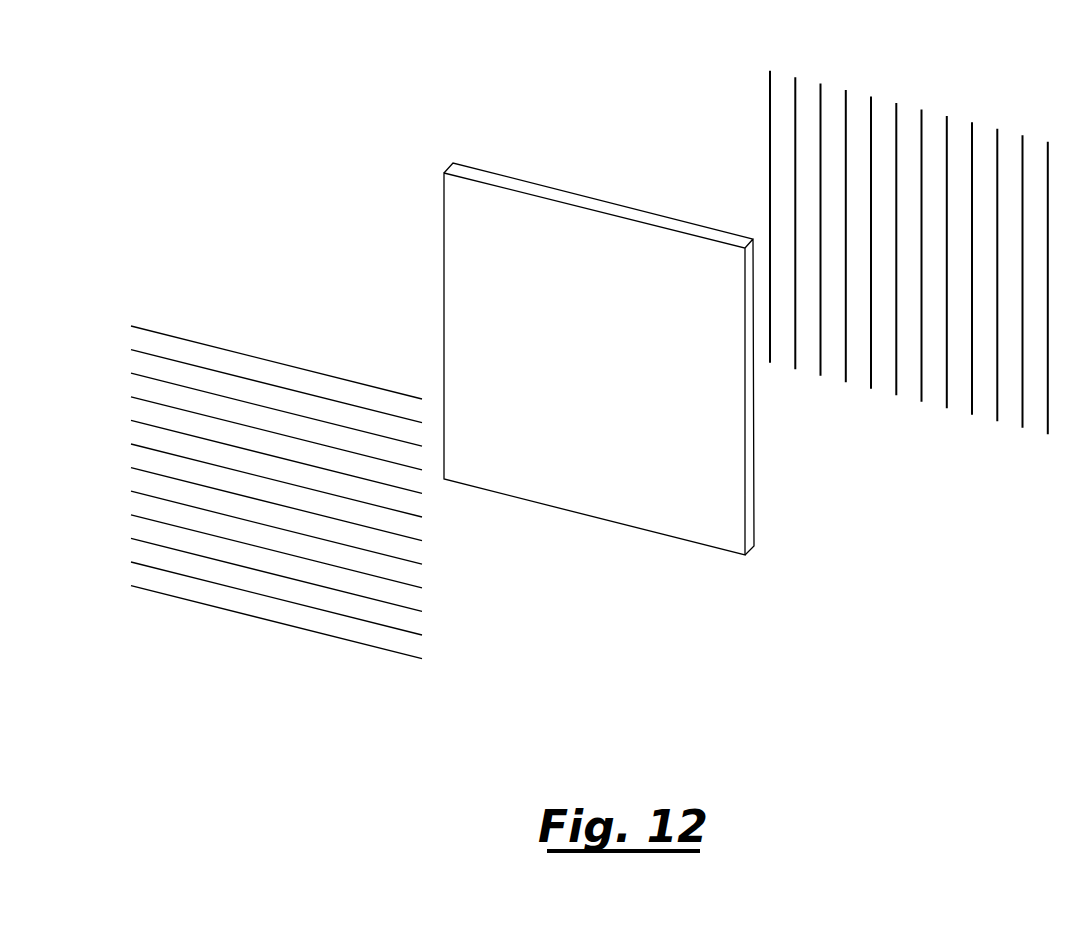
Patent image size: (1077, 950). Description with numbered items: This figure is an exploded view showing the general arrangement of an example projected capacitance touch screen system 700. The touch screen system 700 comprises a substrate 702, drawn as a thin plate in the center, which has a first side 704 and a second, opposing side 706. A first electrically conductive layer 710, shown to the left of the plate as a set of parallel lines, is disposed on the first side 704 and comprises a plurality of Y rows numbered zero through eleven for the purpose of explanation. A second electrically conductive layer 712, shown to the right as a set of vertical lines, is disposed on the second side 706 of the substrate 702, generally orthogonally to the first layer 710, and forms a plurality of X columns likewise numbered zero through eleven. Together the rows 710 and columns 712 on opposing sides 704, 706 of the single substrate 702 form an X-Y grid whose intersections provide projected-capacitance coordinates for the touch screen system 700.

The touch screen system 700 is at (291, 113).
The substrate 702 is at (679, 548).
The first side 704 is at (564, 366).
The second, opposing side 706 is at (602, 200).
The first electrically conductive layer 710 is at (278, 686).
The second electrically conductive layer 712 is at (907, 64).